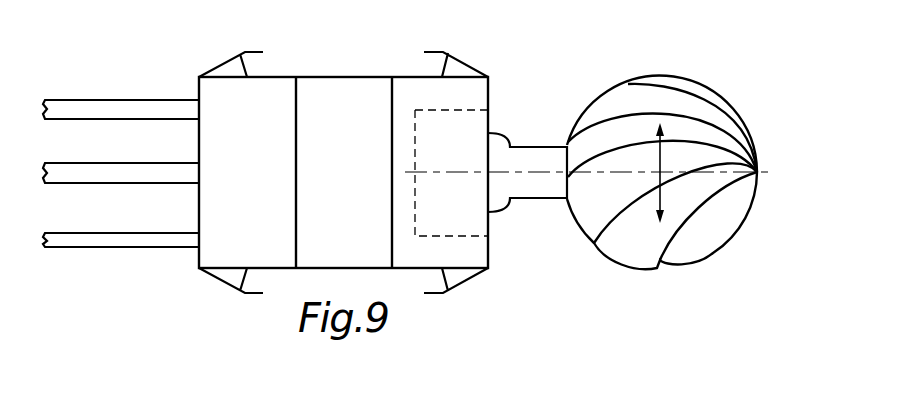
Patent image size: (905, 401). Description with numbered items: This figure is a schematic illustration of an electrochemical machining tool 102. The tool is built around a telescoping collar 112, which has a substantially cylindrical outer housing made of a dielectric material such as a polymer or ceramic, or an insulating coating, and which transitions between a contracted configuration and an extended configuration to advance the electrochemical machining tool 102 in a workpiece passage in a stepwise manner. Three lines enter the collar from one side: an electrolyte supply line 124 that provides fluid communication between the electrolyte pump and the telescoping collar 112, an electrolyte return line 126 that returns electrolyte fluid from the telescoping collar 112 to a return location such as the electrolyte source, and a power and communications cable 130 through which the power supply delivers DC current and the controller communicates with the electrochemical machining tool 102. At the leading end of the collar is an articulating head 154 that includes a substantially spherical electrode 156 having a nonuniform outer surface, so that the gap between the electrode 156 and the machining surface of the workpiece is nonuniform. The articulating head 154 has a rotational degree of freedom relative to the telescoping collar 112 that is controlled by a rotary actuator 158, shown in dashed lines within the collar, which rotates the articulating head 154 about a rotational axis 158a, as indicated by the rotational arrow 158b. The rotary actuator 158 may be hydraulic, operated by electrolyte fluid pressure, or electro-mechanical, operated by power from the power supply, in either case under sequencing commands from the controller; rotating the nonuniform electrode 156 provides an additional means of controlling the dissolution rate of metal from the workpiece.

The electrochemical machining tool 102 is at (407, 155).
The telescoping collar 112 is at (314, 67).
The electrolyte supply line 124 is at (108, 100).
The electrolyte return line 126 is at (108, 163).
The power and communications cable 130 is at (108, 233).
The articulating head 154 is at (662, 155).
The substantially spherical electrode 156 is at (703, 88).
The rotary actuator 158 is at (452, 237).
The rotational axis 158a is at (545, 172).
The rotational arrow 158b is at (672, 200).